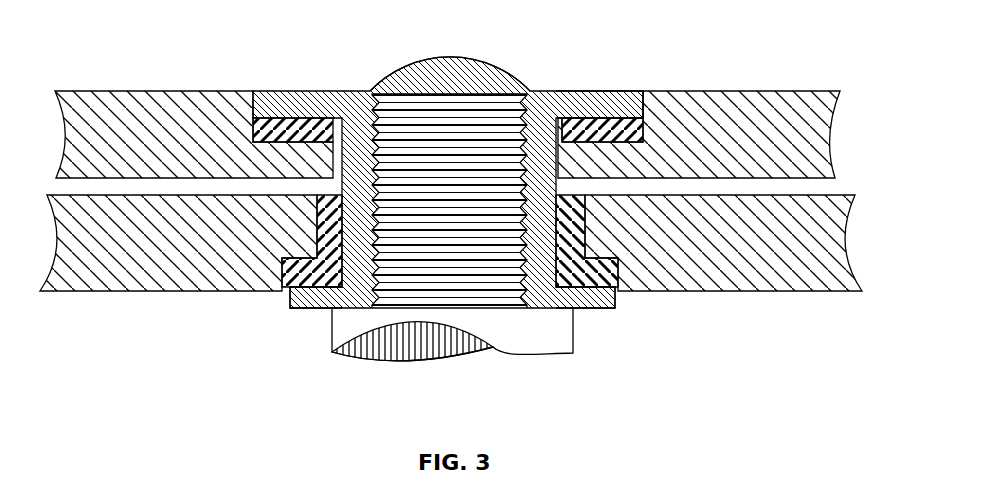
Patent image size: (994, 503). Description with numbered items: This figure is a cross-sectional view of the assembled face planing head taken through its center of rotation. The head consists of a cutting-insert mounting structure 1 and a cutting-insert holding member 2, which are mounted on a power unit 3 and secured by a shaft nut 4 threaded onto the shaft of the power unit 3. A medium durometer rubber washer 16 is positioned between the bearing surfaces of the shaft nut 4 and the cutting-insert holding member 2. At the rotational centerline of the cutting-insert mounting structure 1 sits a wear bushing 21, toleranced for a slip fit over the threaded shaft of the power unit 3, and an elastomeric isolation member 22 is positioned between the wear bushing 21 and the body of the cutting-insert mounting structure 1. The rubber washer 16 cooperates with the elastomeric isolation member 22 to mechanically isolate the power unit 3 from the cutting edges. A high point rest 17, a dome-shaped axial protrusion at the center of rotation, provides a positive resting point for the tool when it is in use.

The cutting-insert mounting structure 1 is at (835, 260).
The cutting-insert holding member 2 is at (820, 137).
The power unit 3 is at (422, 342).
The shaft nut 4 is at (280, 107).
The rubber washer 16 is at (582, 92).
The high point rest 17 is at (445, 72).
The wear bushing 21 is at (590, 298).
The elastomeric isolation member 22 is at (312, 298).